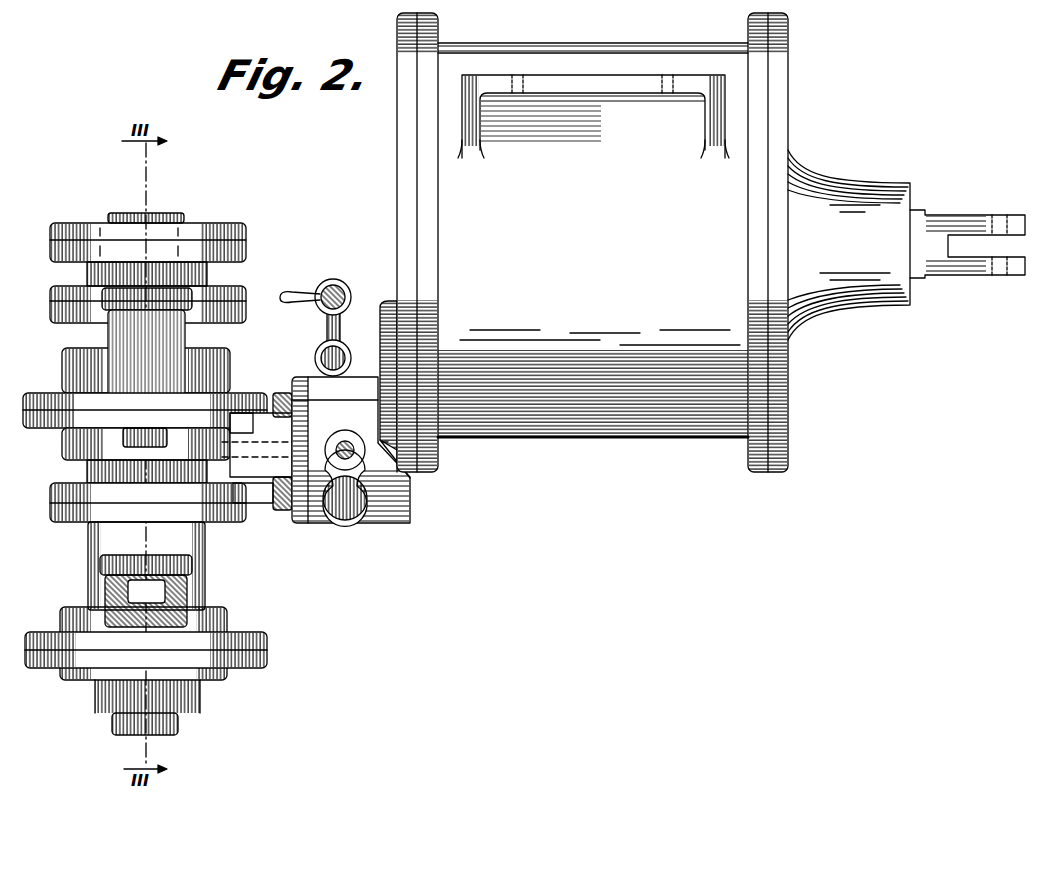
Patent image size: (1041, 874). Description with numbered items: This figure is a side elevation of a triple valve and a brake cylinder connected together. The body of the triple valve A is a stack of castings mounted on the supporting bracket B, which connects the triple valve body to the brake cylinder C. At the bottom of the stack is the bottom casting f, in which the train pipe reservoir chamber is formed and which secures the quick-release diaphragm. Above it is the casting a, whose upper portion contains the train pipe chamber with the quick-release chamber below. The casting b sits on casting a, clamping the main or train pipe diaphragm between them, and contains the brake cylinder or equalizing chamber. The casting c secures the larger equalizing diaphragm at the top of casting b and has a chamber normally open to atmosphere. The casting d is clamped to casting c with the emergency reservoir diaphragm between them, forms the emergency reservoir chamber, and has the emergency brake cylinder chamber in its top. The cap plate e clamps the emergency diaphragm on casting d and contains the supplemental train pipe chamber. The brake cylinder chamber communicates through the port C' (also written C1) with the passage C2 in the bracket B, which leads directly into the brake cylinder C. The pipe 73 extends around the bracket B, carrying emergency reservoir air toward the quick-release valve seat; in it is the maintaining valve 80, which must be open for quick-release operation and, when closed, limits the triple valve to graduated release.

The body of the triple valve A is at (133, 466).
The cap plate e is at (60, 223).
The casting d is at (87, 272).
The casting c is at (72, 362).
The casting b is at (87, 470).
The casting a is at (88, 553).
The bottom casting f is at (63, 658).
The supporting bracket B is at (366, 523).
The brake cylinder C is at (711, 242).
The port C' is at (254, 398).
The port C1 is at (268, 448).
The passage C2 is at (384, 452).
The pipe 73 is at (326, 331).
The maintaining valve 80 is at (337, 284).